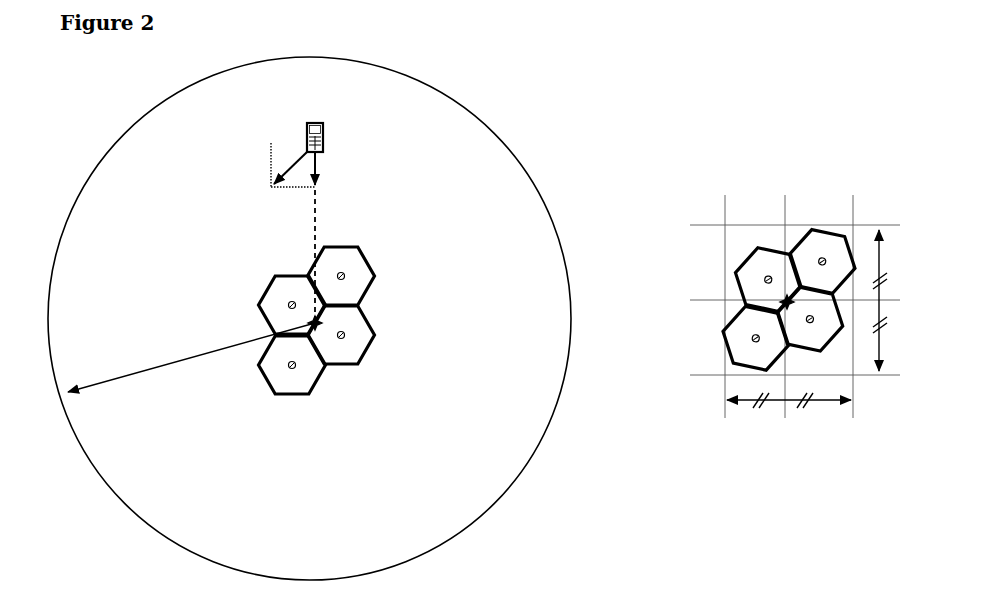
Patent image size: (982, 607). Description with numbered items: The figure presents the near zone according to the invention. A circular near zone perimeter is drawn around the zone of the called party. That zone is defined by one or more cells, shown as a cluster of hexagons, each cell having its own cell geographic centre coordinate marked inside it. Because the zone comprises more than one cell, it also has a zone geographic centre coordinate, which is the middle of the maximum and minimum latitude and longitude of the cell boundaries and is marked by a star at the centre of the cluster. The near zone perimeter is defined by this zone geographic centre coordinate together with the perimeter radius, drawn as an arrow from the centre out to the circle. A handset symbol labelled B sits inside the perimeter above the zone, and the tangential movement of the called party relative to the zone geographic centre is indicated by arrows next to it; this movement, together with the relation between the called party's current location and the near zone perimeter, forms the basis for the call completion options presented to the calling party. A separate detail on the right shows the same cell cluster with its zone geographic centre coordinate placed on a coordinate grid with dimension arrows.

The mobile device (camera) B is at (315, 122).